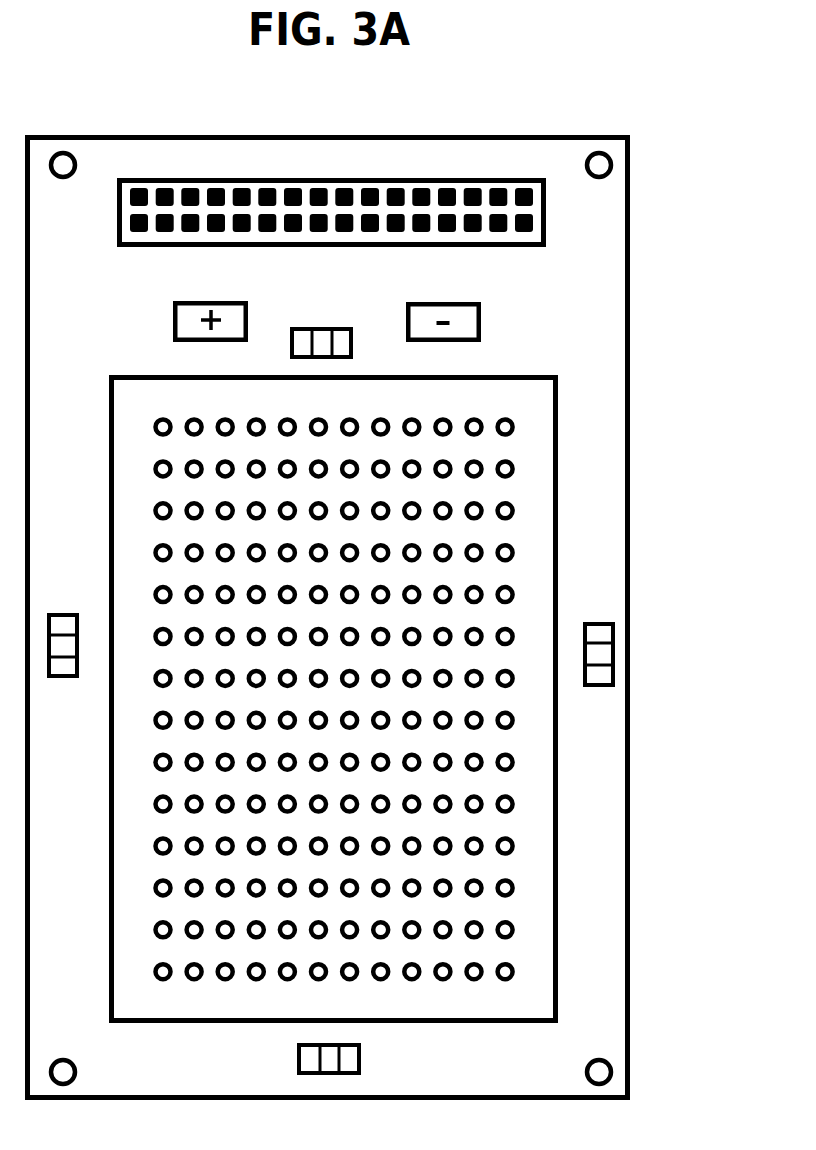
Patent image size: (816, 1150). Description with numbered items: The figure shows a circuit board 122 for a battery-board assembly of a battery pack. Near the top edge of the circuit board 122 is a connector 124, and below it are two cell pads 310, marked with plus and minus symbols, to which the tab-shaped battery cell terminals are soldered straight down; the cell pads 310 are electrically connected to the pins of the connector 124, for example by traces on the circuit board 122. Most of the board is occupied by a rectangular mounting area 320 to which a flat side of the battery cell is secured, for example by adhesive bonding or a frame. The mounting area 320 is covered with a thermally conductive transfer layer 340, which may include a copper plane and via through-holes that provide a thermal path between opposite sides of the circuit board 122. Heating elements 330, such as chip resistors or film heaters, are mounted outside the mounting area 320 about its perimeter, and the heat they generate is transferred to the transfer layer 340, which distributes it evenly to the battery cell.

The circuit board 122 is at (629, 151).
The connector 124 is at (546, 214).
The cell pads 310 is at (176, 318).
The mounting area 320 is at (558, 418).
The heating element 330 is at (614, 662).
The thermally conductive transfer layer 340 is at (527, 750).